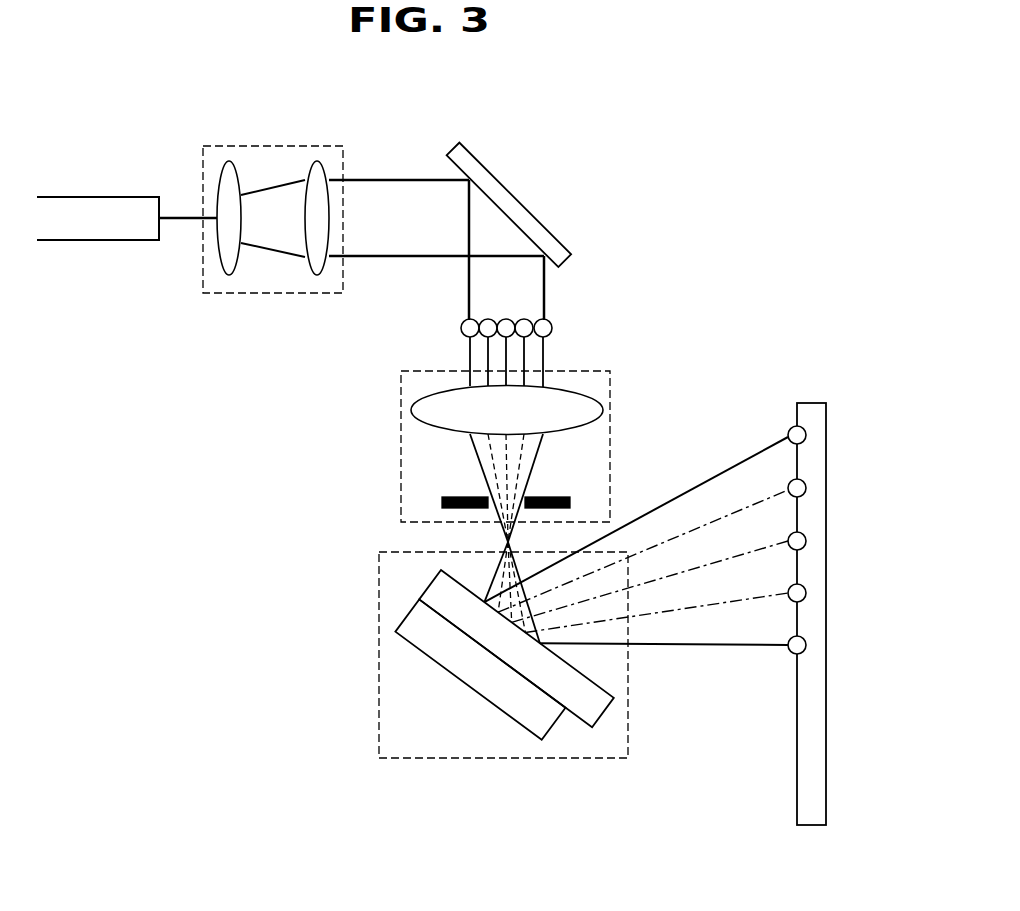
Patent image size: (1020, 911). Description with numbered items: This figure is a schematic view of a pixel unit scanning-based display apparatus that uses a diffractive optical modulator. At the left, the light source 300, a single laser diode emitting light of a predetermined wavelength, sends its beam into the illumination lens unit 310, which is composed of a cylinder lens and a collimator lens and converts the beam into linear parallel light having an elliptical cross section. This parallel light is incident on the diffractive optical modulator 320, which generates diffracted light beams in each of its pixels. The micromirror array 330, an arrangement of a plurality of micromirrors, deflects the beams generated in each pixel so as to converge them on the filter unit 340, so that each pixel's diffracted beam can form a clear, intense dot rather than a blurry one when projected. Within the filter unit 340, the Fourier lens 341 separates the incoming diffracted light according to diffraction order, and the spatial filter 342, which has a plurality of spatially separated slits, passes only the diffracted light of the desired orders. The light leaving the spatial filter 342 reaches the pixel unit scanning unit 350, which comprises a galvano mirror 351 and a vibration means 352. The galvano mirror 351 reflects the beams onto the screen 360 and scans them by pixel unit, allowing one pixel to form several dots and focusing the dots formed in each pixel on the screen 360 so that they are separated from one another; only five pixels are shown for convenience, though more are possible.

The light source 300 is at (100, 197).
The illumination lens unit 310 is at (275, 146).
The diffractive optical modulator 320 is at (490, 169).
The micromirror array 330 is at (552, 328).
The filter unit 340 is at (449, 446).
The Fourier lens 341 is at (412, 410).
The spatial filter 342 is at (442, 503).
The pixel unit scanning unit 350 is at (447, 654).
The galvano mirror 351 is at (434, 580).
The vibration means 352 is at (405, 618).
The screen 360 is at (827, 565).